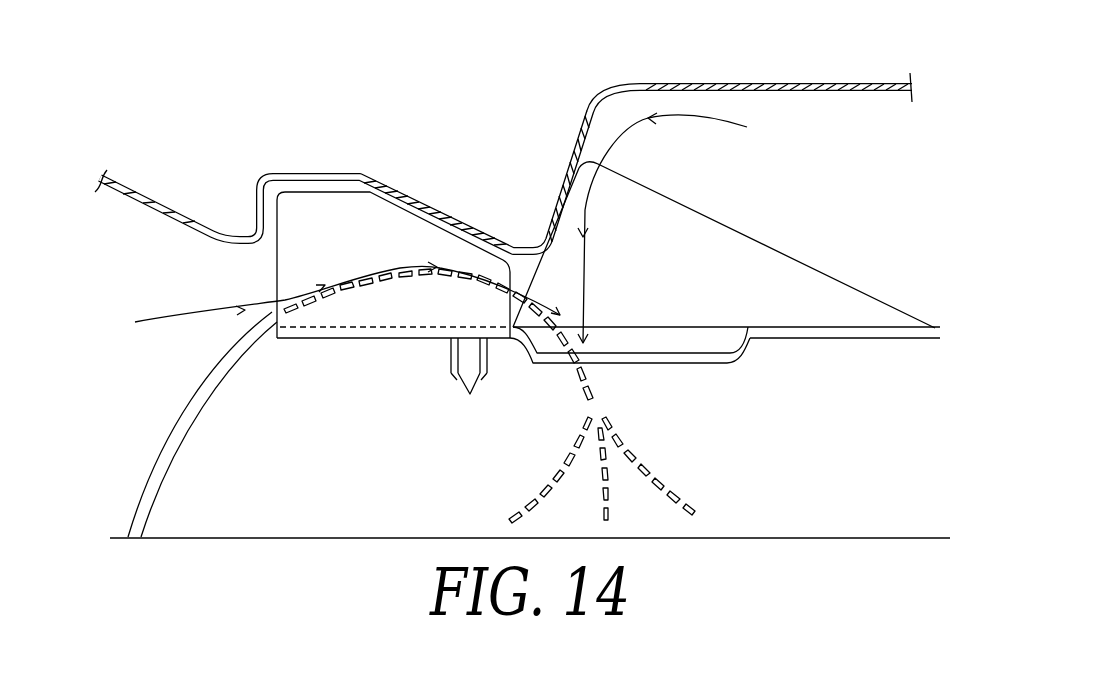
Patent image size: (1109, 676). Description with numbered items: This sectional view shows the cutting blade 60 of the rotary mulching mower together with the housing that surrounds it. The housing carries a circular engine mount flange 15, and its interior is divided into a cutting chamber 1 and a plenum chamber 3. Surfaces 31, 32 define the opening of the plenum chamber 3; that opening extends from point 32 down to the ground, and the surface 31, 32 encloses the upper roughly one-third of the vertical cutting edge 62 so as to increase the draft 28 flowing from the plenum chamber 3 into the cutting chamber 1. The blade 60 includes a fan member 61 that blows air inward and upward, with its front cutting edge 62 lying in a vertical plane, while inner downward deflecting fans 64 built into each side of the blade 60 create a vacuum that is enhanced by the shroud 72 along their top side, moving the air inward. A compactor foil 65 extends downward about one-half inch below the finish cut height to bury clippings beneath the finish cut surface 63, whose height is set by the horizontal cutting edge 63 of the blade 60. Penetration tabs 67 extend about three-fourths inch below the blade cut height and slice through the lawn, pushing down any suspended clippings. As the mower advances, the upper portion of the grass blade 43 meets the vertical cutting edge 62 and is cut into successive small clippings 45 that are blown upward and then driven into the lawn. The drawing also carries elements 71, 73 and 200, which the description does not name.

The cutting chamber 1 is at (852, 213).
The plenum chamber 3 is at (130, 271).
The circular engine mount flange 15 is at (768, 84).
The inward air flow 28 is at (203, 314).
The surface 31 is at (261, 181).
The surface 32 is at (257, 244).
The upper portion of the grass blade 43 is at (197, 417).
The clippings 45 is at (315, 298).
The cutting blade 60 is at (828, 340).
The fan member 61 is at (387, 200).
The front cutting edge 62 is at (278, 233).
The horizontal cutting edge 63 is at (367, 340).
The inner downward deflecting fan 64 is at (740, 223).
The compactor foil 65 is at (692, 365).
The penetration tabs 67 is at (470, 396).
The cover panel 71 is at (347, 173).
The shroud 72 is at (552, 205).
The downward air flow 73 is at (588, 203).
The flow path 200 is at (433, 266).